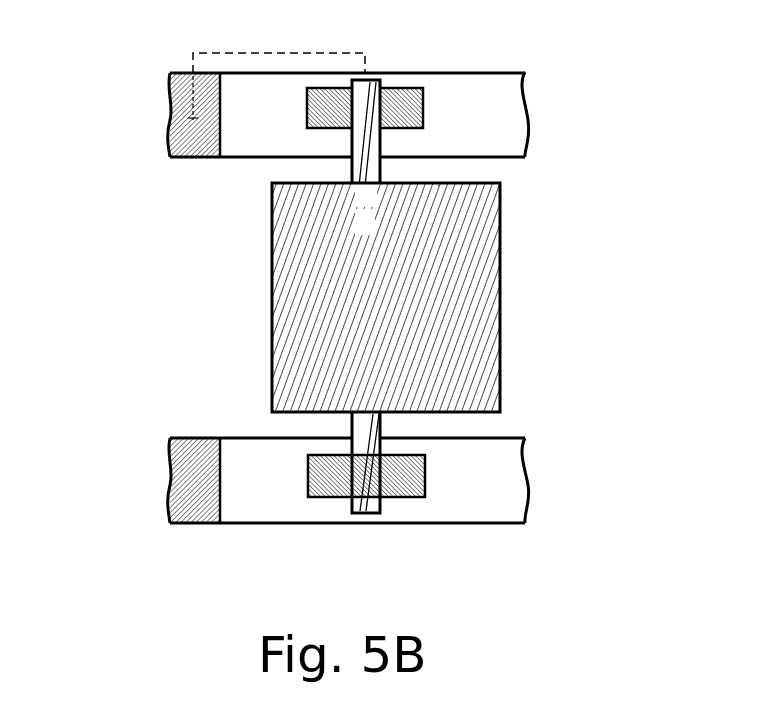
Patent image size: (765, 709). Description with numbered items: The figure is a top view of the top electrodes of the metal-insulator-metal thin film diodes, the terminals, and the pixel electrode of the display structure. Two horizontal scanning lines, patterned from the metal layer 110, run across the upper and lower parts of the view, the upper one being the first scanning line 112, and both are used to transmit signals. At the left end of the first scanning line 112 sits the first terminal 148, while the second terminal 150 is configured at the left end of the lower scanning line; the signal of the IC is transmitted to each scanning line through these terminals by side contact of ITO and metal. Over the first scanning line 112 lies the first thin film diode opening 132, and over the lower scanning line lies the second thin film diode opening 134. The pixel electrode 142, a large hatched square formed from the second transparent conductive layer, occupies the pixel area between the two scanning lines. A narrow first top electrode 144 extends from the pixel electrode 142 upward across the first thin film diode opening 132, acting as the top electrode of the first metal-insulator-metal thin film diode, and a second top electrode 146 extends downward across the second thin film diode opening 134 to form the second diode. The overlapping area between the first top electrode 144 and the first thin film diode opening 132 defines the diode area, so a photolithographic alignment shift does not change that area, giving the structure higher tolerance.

The metal layer 110 is at (510, 87).
The first scanning line 112 is at (497, 510).
The first thin film diode opening 132 is at (412, 88).
The second thin film diode opening 134 is at (410, 488).
The pixel electrode 142 is at (283, 350).
The first top electrode 144 is at (366, 80).
The second top electrode 146 is at (370, 510).
The first terminal 148 is at (184, 73).
The second terminal 150 is at (193, 512).